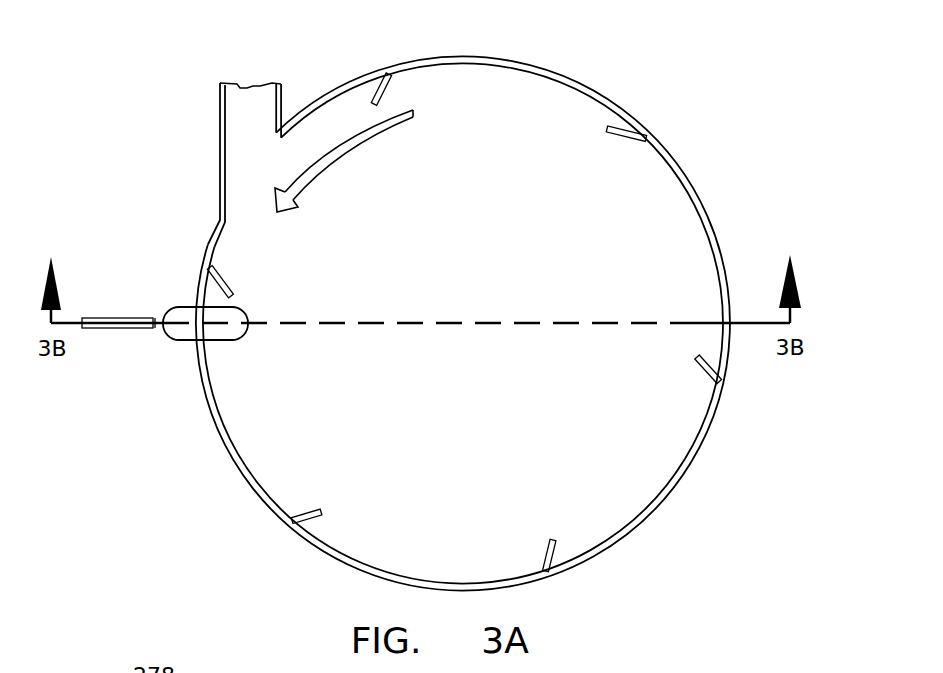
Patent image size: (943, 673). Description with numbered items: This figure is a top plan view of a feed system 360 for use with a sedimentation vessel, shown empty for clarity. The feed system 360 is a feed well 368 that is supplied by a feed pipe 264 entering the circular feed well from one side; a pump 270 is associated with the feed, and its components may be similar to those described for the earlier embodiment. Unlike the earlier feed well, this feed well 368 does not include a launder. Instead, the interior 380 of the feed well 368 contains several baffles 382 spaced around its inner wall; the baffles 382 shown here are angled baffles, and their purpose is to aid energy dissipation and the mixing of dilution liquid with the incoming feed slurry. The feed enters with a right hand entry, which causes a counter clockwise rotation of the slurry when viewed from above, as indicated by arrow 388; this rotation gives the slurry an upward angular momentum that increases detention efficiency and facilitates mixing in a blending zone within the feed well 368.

The feed pipe 264 is at (247, 112).
The pump 270 is at (193, 318).
The feed system 360 is at (505, 324).
The feed well 368 is at (494, 324).
The interior 380 is at (700, 218).
The baffles 382 is at (384, 90).
The arrow 388 is at (322, 152).